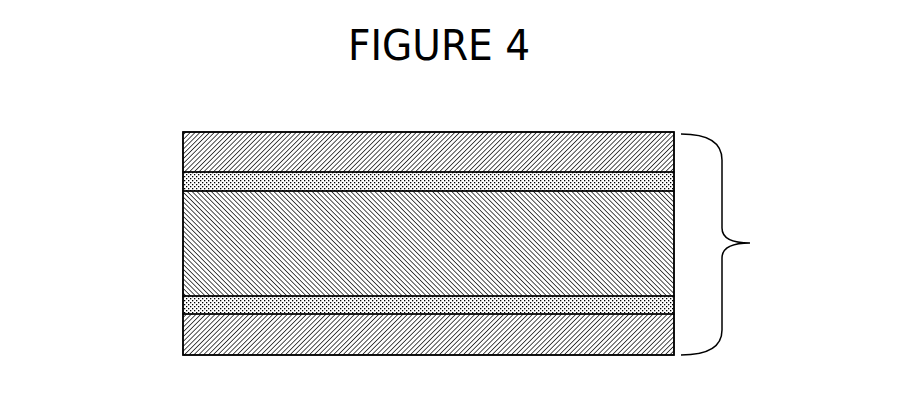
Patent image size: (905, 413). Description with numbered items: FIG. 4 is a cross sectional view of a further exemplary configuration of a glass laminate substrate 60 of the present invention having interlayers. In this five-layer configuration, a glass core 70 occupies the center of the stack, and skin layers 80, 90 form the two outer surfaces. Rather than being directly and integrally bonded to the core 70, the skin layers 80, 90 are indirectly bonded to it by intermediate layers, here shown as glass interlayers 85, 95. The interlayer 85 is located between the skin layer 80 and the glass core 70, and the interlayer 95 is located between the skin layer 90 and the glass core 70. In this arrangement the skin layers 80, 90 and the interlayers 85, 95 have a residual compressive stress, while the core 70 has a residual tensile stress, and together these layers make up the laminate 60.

The glass laminate substrate 60 is at (750, 243).
The glass core 70 is at (183, 257).
The skin layer 80 is at (183, 150).
The glass interlayer 85 is at (183, 177).
The skin layer 90 is at (183, 338).
The glass interlayer 95 is at (183, 308).